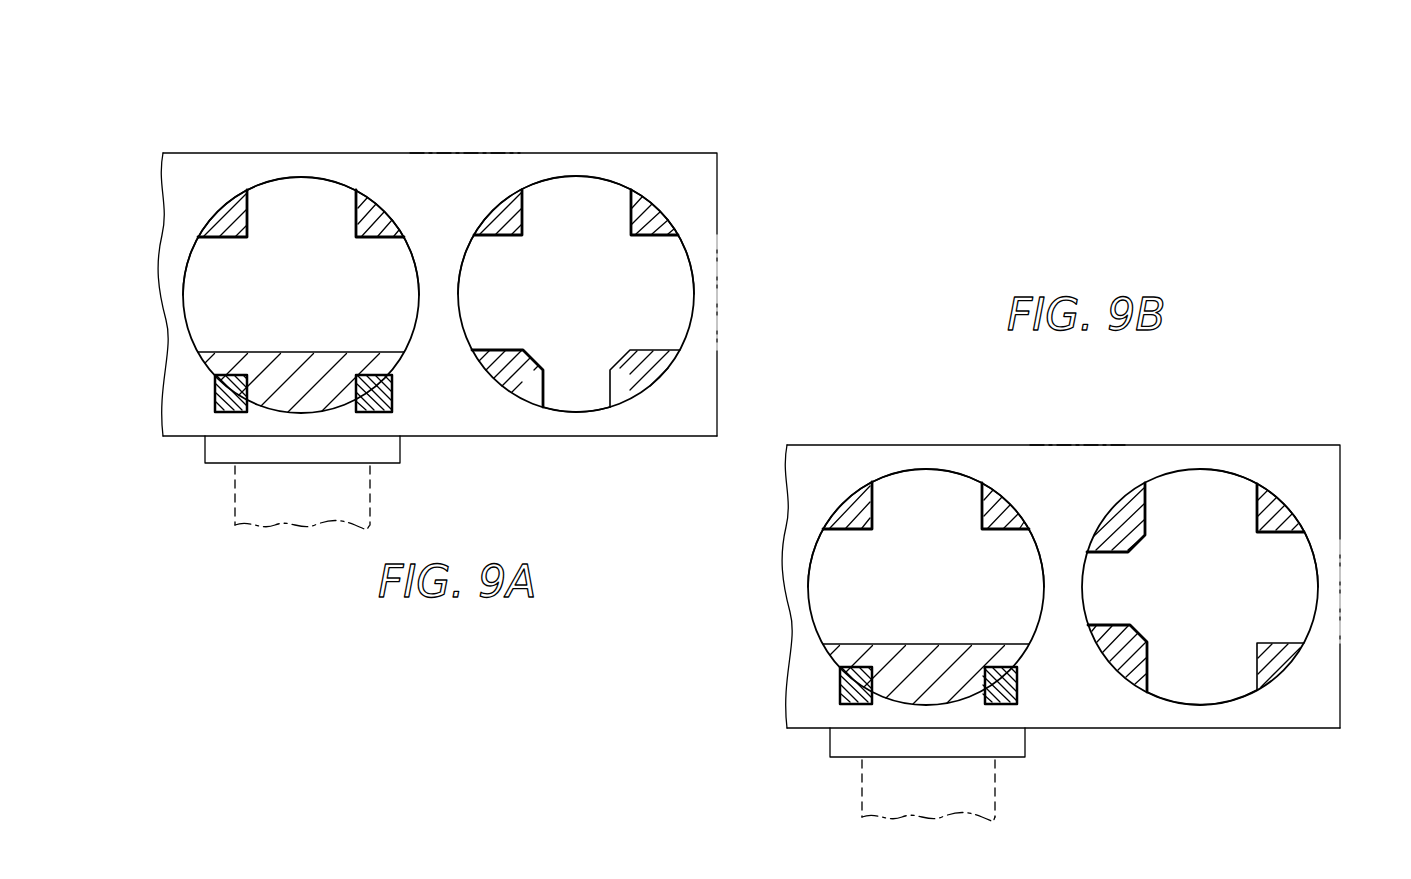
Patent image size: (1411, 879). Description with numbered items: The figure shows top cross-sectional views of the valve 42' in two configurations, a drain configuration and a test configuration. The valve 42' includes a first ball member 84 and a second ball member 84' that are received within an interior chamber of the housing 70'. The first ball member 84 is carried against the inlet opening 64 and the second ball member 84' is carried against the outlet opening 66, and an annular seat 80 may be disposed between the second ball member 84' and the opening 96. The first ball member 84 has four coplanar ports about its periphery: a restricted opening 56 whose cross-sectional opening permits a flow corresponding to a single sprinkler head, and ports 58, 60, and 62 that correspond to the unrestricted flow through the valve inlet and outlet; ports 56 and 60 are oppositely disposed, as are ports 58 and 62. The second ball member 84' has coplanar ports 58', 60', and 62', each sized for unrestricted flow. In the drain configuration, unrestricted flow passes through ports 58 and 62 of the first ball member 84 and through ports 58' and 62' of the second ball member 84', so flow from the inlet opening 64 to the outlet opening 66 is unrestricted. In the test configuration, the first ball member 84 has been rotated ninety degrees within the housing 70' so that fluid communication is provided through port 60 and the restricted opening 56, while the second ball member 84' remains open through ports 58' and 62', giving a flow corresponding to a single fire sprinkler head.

In FIG. 9A, the valve 42' is at (461, 236).
In FIG. 9B, the valve 42' is at (1073, 515).
In FIG. 9A, the restricted opening 56 is at (576, 412).
In FIG. 9B, the restricted opening 56 is at (1083, 593).
In FIG. 9A, the port 58 is at (692, 240).
In FIG. 9B, the port 58 is at (1225, 717).
In FIG. 9A, the port 58' is at (376, 278).
In FIG. 9B, the port 58' is at (996, 580).
In FIG. 9A, the port 60 is at (576, 249).
In FIG. 9B, the port 60 is at (1302, 535).
In FIG. 9A, the third port 60' is at (301, 252).
In FIG. 9B, the third port 60' is at (926, 544).
In FIG. 9A, the port 62 is at (508, 235).
In FIG. 9B, the port 62 is at (1200, 539).
In FIG. 9A, the port 62' is at (193, 242).
In FIG. 9B, the port 62' is at (816, 537).
In FIG. 9A, the inlet opening 64 is at (718, 260).
In FIG. 9B, the inlet opening 64 is at (1340, 610).
In FIG. 9A, the outlet opening 66 is at (158, 258).
In FIG. 9B, the outlet opening 66 is at (780, 558).
In FIG. 9A, the housing 70' is at (465, 117).
In FIG. 9B, the housing 70' is at (1080, 409).
In FIG. 9A, the annular seat 80 is at (392, 402).
In FIG. 9B, the annular seat 80 is at (845, 700).
In FIG. 9A, the first ball member 84 is at (645, 423).
In FIG. 9B, the first ball member 84 is at (1110, 700).
In FIG. 9A, the second ball member 84' is at (276, 444).
In FIG. 9B, the second ball member 84' is at (865, 674).
In FIG. 9A, the opening 96 is at (301, 513).
In FIG. 9B, the opening 96 is at (862, 795).